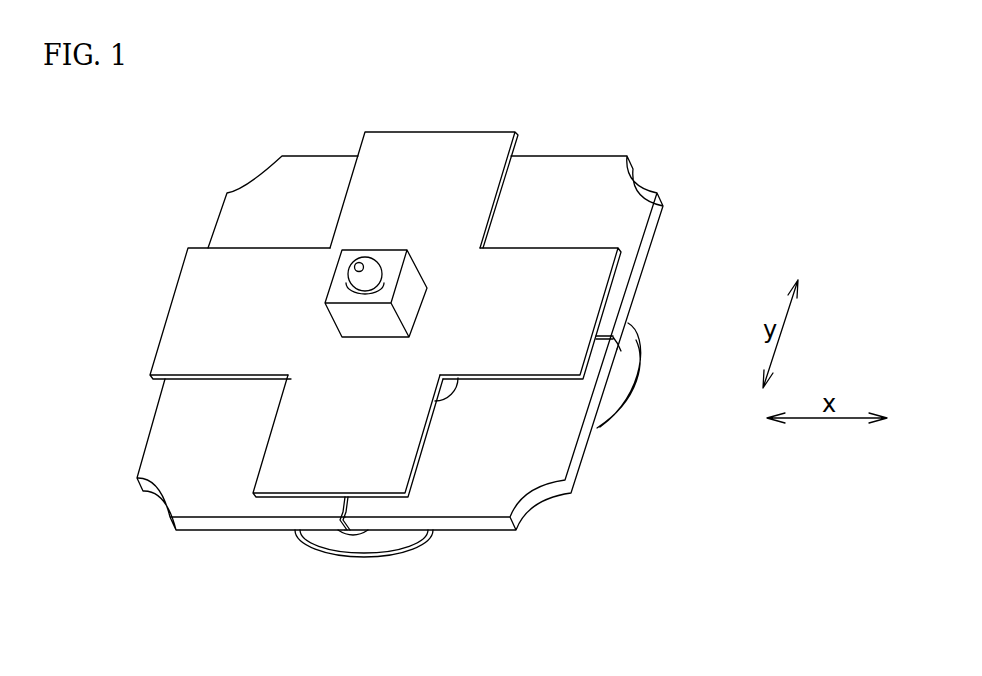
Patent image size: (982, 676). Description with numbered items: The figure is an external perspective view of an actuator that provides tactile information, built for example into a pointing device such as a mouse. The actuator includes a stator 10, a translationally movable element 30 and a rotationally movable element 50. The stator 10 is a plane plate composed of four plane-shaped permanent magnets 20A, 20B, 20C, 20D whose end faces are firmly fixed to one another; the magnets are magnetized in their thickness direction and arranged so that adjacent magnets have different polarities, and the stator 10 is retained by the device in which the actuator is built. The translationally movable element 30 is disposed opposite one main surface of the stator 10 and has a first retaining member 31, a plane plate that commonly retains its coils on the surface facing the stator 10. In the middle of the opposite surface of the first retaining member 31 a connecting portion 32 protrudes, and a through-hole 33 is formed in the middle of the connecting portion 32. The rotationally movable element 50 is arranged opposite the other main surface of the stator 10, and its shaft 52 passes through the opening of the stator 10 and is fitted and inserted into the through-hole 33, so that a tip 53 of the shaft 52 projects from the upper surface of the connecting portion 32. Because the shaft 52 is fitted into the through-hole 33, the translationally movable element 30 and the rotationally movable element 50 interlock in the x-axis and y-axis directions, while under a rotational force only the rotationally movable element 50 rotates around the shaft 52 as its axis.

The stator 10 is at (603, 144).
The permanent magnet 20A is at (637, 222).
The permanent magnet 20B is at (503, 508).
The permanent magnet 20C is at (142, 463).
The permanent magnet 20D is at (230, 215).
The translationally movable element 30 is at (504, 237).
The first retaining member 31 is at (430, 138).
The connecting portion 32 is at (385, 258).
The through-hole 33 is at (383, 266).
The rotationally movable element 50 is at (360, 563).
The shaft 52 is at (353, 290).
The tip 53 is at (368, 258).